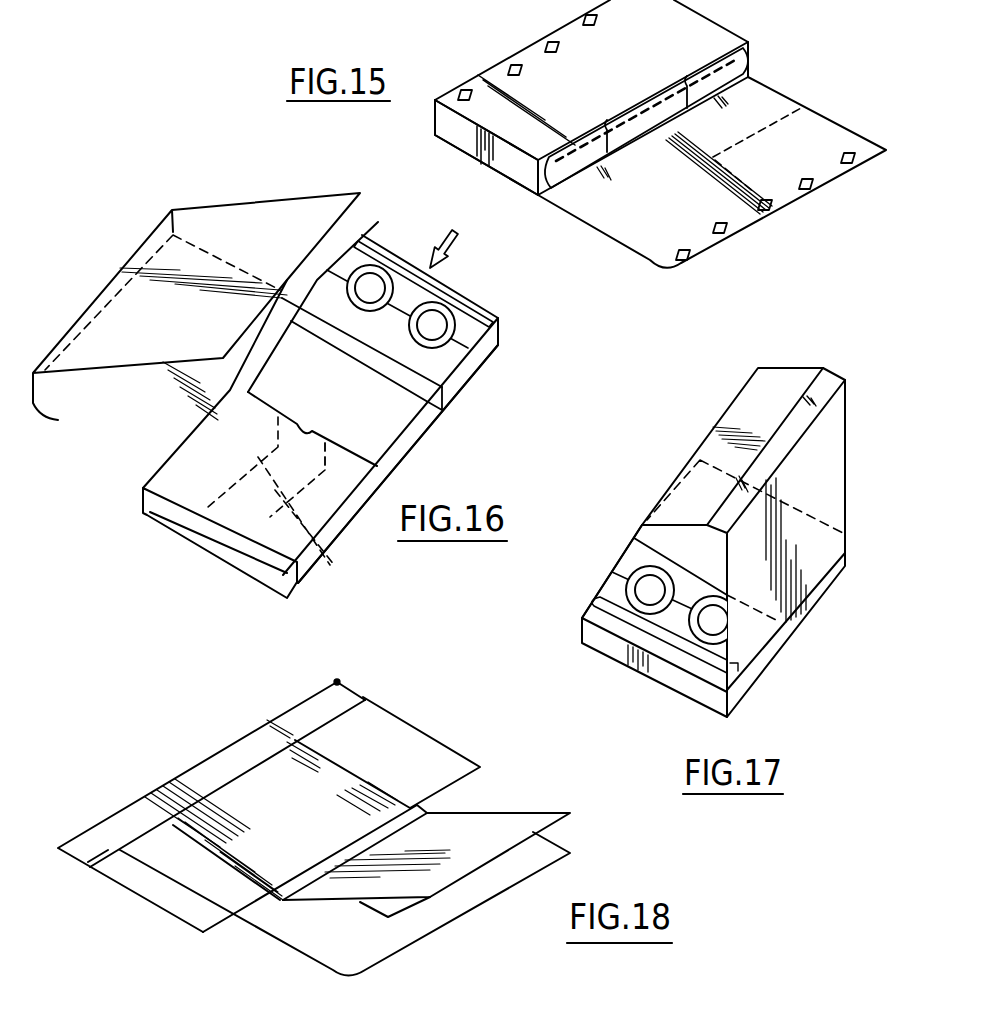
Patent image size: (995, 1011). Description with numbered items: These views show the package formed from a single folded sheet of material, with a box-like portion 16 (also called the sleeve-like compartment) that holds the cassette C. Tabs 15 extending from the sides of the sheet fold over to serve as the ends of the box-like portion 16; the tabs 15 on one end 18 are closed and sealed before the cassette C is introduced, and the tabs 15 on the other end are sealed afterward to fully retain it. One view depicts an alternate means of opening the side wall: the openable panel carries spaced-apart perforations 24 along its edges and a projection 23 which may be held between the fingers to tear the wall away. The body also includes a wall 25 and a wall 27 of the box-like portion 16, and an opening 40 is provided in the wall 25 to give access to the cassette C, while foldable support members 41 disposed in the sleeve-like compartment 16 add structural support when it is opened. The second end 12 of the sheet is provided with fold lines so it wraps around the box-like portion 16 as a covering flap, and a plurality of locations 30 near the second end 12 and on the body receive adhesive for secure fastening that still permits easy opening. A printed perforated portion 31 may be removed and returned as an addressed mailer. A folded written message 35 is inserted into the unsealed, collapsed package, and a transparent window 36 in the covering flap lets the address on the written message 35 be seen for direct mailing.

In FIG. 15, the second end 12 is at (747, 232).
In FIG. 16, the second end 12 is at (360, 195).
In FIG. 17, the second end 12 is at (724, 410).
In FIG. 18, the second end 12 is at (465, 912).
In FIG. 16, the tabs 15 is at (452, 397).
In FIG. 17, the tabs 15 is at (645, 668).
In FIG. 18, the tabs 15 is at (86, 845).
In FIG. 16, the box-like portion 16 is at (418, 469).
In FIG. 15, the one end 18 is at (477, 162).
In FIG. 15, the projection 23 is at (745, 68).
In FIG. 15, the perforations 24 is at (662, 100).
In FIG. 15, the wall 25 is at (497, 68).
In FIG. 16, the wall 25 is at (330, 503).
In FIG. 17, the wall 25 is at (648, 541).
In FIG. 18, the wall 27 is at (383, 750).
In FIG. 15, the locations 30 is at (520, 64).
In FIG. 15, the perforated portion 31 is at (822, 120).
In FIG. 18, the written message 35 is at (520, 818).
In FIG. 18, the transparent window 36 is at (370, 905).
In FIG. 16, the opening 40 is at (392, 430).
In FIG. 16, the foldable support members 41 is at (318, 560).
In FIG. 16, the cassette C is at (475, 366).
In FIG. 17, the cassette C is at (618, 583).